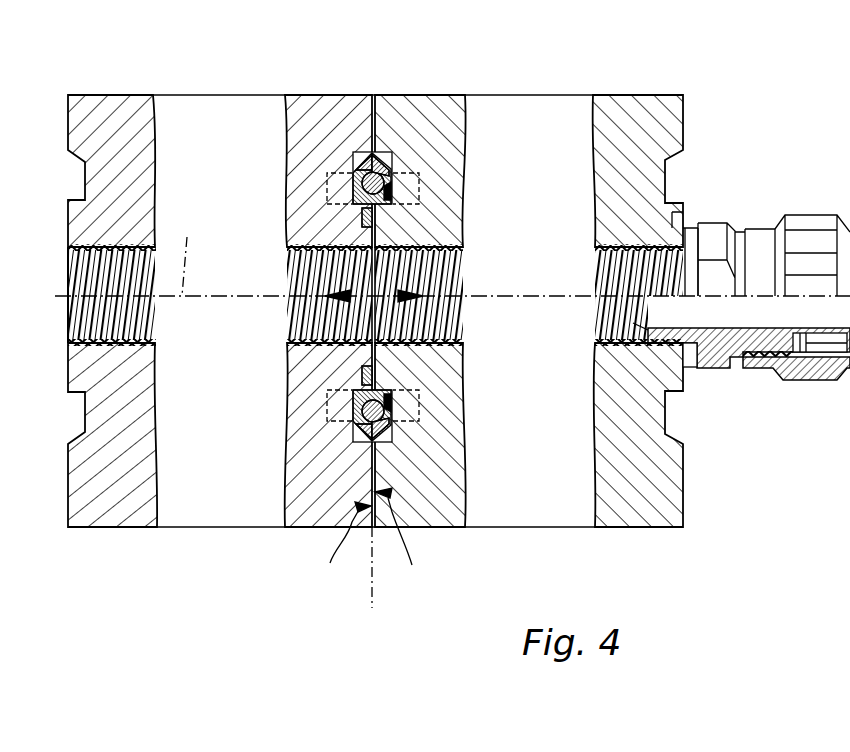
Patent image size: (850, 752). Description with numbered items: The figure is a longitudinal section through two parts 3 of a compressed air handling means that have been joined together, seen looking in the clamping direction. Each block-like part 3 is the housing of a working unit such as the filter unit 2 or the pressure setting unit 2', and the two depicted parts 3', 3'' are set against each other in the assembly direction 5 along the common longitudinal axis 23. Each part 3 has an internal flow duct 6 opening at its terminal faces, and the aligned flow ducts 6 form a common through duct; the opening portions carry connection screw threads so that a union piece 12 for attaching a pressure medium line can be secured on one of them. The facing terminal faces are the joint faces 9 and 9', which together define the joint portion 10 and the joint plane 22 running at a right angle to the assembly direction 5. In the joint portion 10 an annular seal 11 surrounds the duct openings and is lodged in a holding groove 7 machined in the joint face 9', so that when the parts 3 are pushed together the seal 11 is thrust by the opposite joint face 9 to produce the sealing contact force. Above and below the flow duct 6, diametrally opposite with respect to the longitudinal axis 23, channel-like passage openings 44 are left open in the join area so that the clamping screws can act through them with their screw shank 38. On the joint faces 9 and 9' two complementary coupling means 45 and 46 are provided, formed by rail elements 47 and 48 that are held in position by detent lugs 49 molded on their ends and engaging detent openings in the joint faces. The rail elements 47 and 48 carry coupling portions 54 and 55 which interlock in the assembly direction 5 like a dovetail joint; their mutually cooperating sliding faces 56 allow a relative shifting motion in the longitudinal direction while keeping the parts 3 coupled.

The working unit 2 is at (638, 313).
The pressure setting unit 2' is at (293, 312).
The part 3 is at (375, 313).
The part 3' is at (638, 282).
The part 3'' is at (293, 281).
The assembly direction 5 is at (398, 282).
The flow duct 6 is at (128, 330).
The holding groove 7 is at (366, 216).
The joint face 9 is at (344, 546).
The joint face 9' is at (399, 539).
The joint portion 10 is at (375, 334).
The seal 11 is at (362, 372).
The union piece 12 is at (755, 235).
The joint plane 22 is at (373, 598).
The longitudinal axis 23 is at (187, 252).
The screw shank 38 is at (356, 168).
The passage opening 44 is at (356, 195).
The coupling means 45 is at (382, 290).
The rail element 47 is at (382, 290).
The coupling means 46 is at (355, 276).
The rail element 48 is at (355, 276).
The detent lug 49 is at (330, 186).
The coupling portion 54 is at (395, 172).
The coupling portion 55 is at (383, 158).
The sliding face 56 is at (392, 162).